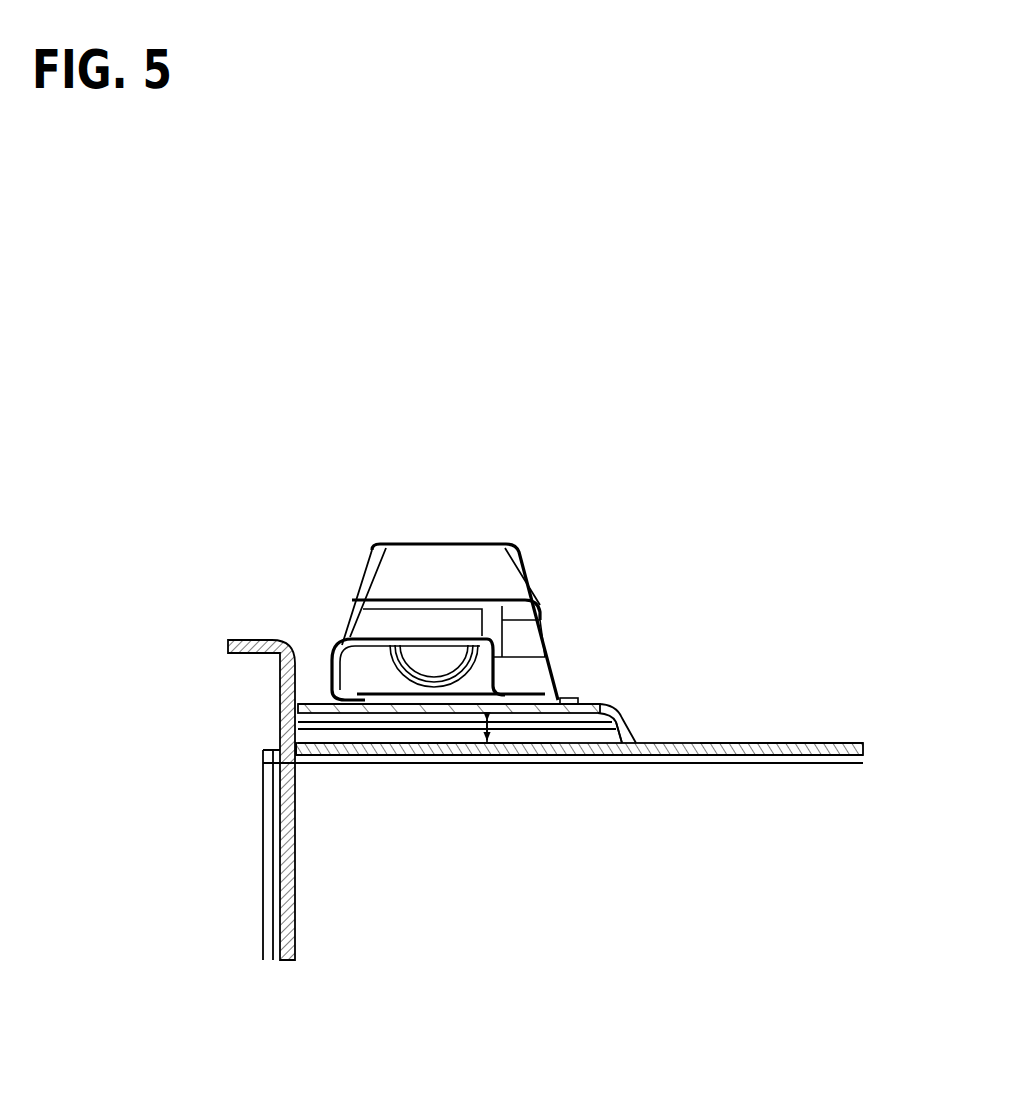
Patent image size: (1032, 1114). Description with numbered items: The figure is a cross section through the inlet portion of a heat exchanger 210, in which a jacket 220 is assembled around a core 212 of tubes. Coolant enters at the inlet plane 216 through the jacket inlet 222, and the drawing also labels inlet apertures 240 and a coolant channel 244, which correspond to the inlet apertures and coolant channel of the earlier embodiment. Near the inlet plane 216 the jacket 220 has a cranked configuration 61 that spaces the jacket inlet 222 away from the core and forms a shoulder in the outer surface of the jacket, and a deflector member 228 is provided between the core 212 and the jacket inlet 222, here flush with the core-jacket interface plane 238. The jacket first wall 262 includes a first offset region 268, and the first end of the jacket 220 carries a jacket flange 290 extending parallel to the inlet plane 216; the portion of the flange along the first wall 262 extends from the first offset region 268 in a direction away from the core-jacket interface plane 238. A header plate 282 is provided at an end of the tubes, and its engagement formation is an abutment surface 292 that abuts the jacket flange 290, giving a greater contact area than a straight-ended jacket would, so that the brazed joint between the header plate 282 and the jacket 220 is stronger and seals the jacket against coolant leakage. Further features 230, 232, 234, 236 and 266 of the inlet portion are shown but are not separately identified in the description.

The heat exchanger 210 is at (744, 522).
The core 212 is at (402, 803).
The inlet plane 216 is at (255, 911).
The jacket 220 is at (866, 737).
The jacket inlet 222 is at (338, 630).
The deflector member 228 is at (527, 707).
The bracket 230 is at (640, 748).
The board top surface 232 is at (387, 750).
The board edge 234 is at (305, 748).
The bracket upper portion 236 is at (490, 728).
The core-jacket interface plane 238 is at (632, 770).
The inlet apertures 240 is at (355, 710).
The coolant channel 244 is at (480, 560).
The jacket first wall 262 is at (807, 743).
The contact arc 266 is at (305, 685).
The first offset region 268 is at (585, 710).
The header plate 282 is at (297, 711).
The jacket flange 290 is at (297, 688).
The abutment surface 292 is at (294, 681).
The cranked configuration 61 is at (639, 698).